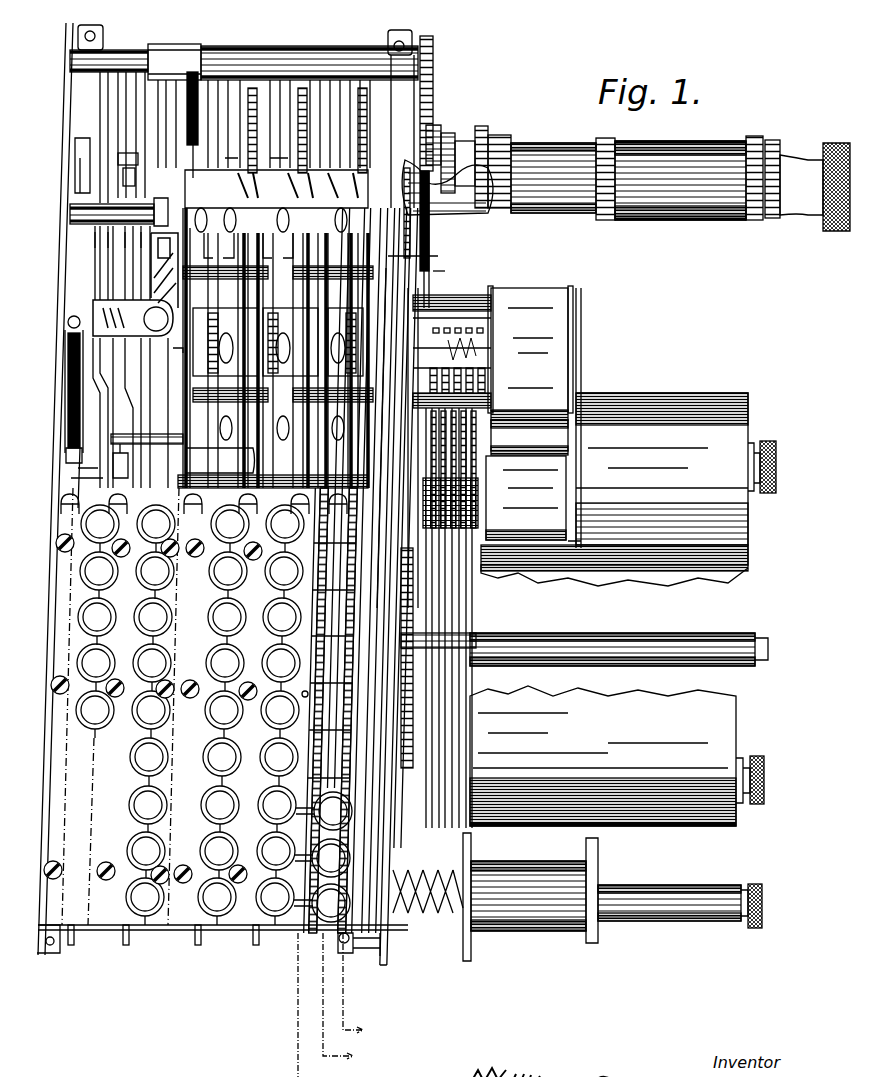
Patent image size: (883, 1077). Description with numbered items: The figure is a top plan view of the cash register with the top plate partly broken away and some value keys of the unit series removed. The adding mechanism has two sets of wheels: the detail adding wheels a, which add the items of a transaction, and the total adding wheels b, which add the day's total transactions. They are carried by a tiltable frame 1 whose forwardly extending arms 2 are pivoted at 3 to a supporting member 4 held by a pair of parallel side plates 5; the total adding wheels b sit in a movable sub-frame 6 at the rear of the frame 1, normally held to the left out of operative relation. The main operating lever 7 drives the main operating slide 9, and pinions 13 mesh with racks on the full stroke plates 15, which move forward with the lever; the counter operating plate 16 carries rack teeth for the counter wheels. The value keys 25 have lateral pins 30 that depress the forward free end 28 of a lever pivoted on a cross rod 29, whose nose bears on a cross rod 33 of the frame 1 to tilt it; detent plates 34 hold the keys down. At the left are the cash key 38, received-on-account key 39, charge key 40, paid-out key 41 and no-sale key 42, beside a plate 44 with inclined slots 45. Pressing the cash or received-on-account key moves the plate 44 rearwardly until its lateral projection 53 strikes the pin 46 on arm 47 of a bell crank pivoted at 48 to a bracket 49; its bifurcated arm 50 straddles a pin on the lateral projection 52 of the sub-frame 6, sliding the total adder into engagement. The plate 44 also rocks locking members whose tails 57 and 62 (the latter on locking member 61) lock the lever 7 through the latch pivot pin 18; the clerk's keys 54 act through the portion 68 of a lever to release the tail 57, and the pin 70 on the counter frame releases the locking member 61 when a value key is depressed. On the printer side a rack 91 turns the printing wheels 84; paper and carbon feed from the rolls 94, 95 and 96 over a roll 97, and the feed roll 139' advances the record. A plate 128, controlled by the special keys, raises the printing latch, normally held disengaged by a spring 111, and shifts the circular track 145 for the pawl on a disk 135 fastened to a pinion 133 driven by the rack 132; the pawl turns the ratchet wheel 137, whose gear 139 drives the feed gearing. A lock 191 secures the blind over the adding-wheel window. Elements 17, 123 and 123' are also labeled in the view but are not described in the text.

The tiltable frame 1 is at (180, 360).
The forwardly extending arms 2 is at (178, 500).
The pivot 3 is at (359, 986).
The supporting member 4 is at (344, 999).
The side plates 5 is at (33, 826).
The sub-frame 6 is at (306, 208).
The main operating lever 7 is at (393, 250).
The main operating slide 9 is at (378, 431).
The pinions 13 is at (50, 947).
The full stroke plates 15 is at (325, 150).
The counter operating plate 16 is at (352, 100).
The bar 17 is at (97, 413).
The pivot pin for the latch 18 is at (120, 145).
The value keys 25 is at (268, 608).
The forward free end of lever 28 is at (292, 473).
The cross rod 29 is at (123, 42).
The lateral pins 30 is at (300, 900).
The cross rod 33 is at (220, 460).
The detent plates 34 is at (115, 937).
The cash (CA) key 38 is at (68, 702).
The received on account (RA) key 39 is at (69, 655).
The charge (CHG) key 40 is at (70, 609).
The paid out (PO) key 41 is at (72, 563).
The no sale (NS) key 42 is at (73, 516).
The plate 44 is at (70, 462).
The inclined slots 45 is at (56, 405).
The pin 46 is at (60, 315).
The arm of bell crank lever 47 is at (133, 318).
The pivot 48 is at (156, 319).
The bracket 49 is at (95, 285).
The arm of bell crank lever 50 is at (164, 270).
The lateral projection 52 is at (178, 200).
The lateral projection 53 is at (58, 360).
The clerk's keys 54 is at (161, 606).
The tail of locking member 57 is at (125, 229).
The locking member 61 is at (197, 205).
The tail of locking member 62 is at (115, 243).
The portion of lever 68 is at (122, 470).
The laterally projecting pin 70 is at (137, 428).
The printing wheels 84 is at (452, 320).
The rack 91 is at (462, 590).
The roll 94 is at (698, 882).
The roll 95 is at (720, 735).
The roll 96 is at (690, 402).
The roll 97 is at (668, 642).
The spring 111 is at (430, 265).
The rod 123 is at (215, 125).
The shaft 123' is at (283, 52).
The plate 128 is at (437, 227).
The rack 132 is at (426, 90).
The pinion 133 is at (410, 155).
The disk 135 is at (425, 118).
The ratchet wheel 137 is at (435, 130).
The gear 139 is at (542, 159).
The feed roll 139' is at (723, 172).
The circular track 145 is at (452, 125).
The lock 191 is at (72, 135).
The detail adding wheels a is at (330, 310).
The total adding wheels b is at (226, 205).